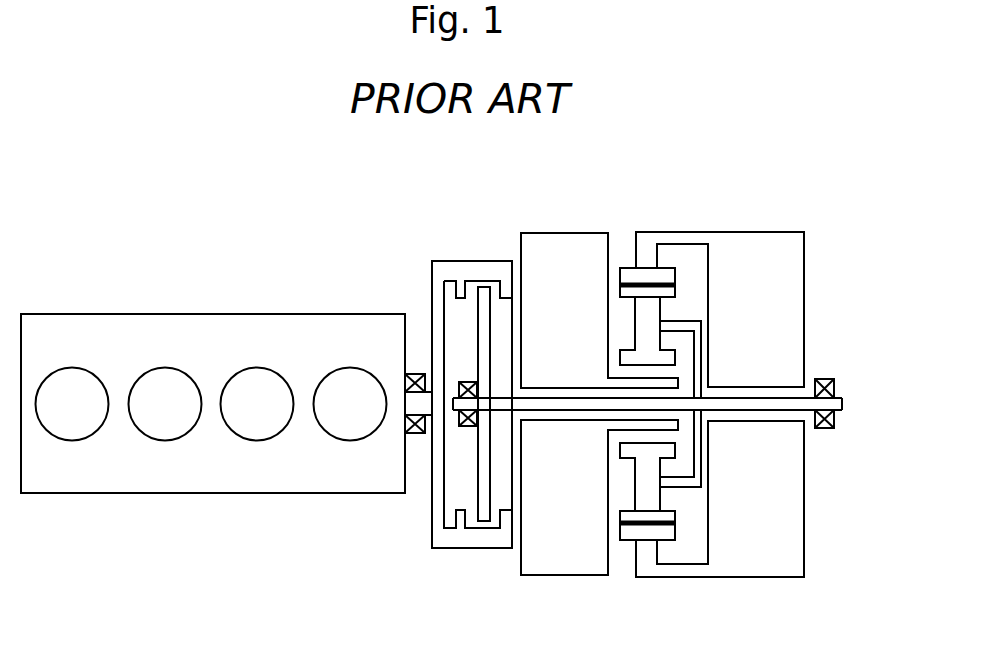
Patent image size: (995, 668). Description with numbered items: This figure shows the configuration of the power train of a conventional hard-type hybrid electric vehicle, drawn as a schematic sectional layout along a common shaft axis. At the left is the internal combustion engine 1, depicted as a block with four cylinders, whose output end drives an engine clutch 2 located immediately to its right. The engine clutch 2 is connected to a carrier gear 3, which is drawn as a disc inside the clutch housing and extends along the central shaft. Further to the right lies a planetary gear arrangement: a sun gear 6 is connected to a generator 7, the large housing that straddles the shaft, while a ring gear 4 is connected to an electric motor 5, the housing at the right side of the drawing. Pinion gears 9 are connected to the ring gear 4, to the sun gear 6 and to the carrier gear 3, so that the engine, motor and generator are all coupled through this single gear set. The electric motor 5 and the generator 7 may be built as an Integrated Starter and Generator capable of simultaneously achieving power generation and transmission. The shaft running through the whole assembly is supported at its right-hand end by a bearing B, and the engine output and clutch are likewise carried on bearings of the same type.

The internal combustion engine 1 is at (202, 314).
The engine clutch 2 is at (432, 302).
The carrier gear 3 is at (508, 410).
The ring gear 4 is at (665, 268).
The electric motor 5 is at (804, 481).
The sun gear 6 is at (678, 382).
The generator 7 is at (565, 576).
The pinion gears 9 is at (643, 325).
The bearing B is at (835, 417).